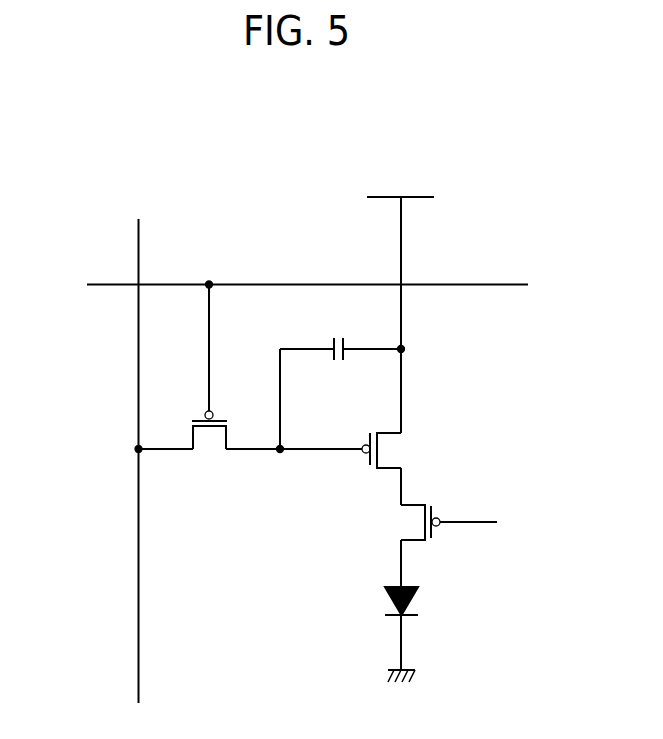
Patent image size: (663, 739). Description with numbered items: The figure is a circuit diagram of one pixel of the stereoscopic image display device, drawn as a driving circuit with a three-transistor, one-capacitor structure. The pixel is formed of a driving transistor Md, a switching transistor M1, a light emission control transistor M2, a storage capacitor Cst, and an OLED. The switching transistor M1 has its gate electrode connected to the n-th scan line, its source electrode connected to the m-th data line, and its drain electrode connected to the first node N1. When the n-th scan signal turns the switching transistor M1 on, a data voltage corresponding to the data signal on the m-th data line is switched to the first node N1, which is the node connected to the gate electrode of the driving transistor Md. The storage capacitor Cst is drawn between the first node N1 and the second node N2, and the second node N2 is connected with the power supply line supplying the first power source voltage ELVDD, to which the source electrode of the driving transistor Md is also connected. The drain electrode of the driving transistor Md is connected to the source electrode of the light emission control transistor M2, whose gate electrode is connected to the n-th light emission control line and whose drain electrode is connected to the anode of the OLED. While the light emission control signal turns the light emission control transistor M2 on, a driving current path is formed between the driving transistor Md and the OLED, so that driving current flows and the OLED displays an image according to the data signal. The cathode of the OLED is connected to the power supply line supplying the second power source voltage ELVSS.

The first power source voltage ELVDD is at (400, 257).
The second node N2 is at (417, 383).
The storage capacitor Cst is at (340, 393).
The first node N1 is at (294, 466).
The switching transistor M1 is at (181, 385).
The driving transistor Md is at (398, 469).
The light emission control transistor M2 is at (404, 546).
The element OLED is at (432, 626).
The second power source voltage ELVSS is at (401, 693).